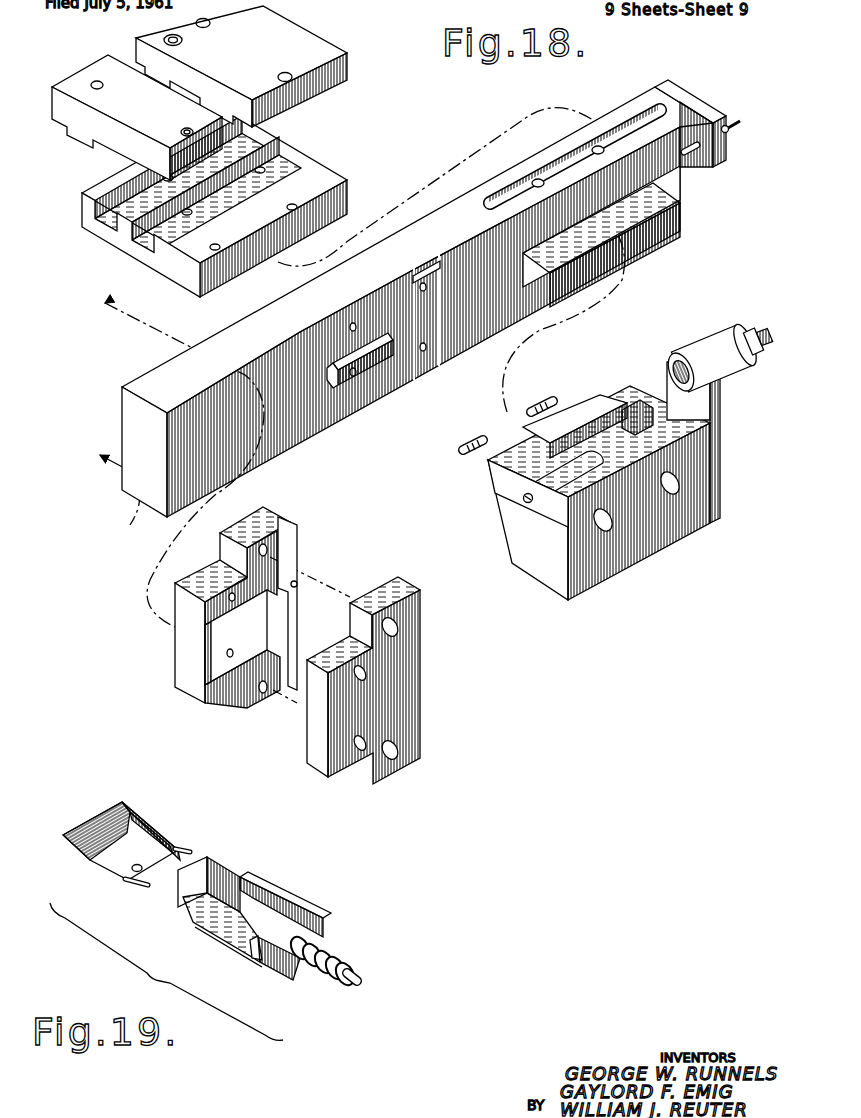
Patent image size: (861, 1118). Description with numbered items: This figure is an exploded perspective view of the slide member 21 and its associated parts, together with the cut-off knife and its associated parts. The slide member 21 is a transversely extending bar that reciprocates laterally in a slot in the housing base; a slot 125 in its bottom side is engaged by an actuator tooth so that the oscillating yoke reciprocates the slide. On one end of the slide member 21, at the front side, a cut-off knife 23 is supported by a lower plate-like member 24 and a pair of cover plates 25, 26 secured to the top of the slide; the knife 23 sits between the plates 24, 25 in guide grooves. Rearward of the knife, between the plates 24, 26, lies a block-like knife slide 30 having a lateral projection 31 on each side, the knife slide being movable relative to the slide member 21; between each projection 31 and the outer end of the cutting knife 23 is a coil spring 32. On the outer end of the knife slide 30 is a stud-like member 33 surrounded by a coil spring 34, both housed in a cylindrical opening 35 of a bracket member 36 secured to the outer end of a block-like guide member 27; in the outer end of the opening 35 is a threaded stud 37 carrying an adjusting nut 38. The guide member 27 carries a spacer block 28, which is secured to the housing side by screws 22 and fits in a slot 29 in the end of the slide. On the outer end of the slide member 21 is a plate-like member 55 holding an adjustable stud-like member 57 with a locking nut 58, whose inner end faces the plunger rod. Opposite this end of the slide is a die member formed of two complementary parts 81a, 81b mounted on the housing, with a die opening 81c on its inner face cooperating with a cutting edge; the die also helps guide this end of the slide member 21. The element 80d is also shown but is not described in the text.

In FIG. 18, the slide member 21 is at (448, 350).
In FIG. 18, the screws 22 is at (485, 410).
In FIG. 19, the cut-off knife 23 is at (150, 813).
In FIG. 18, the lower plate-like member 24 is at (112, 230).
In FIG. 18, the cover plate 25 is at (70, 80).
In FIG. 18, the cover plate 26 is at (287, 28).
In FIG. 18, the block-like guide member 27 is at (632, 553).
In FIG. 18, the spacer block 28 is at (490, 480).
In FIG. 18, the slot 29 is at (633, 213).
In FIG. 19, the knife slide 30 is at (227, 873).
In FIG. 19, the lateral projection 31 is at (287, 890).
In FIG. 19, the coil spring 32 is at (183, 855).
In FIG. 19, the stud-like member 33 is at (358, 980).
In FIG. 19, the coil spring 34 is at (325, 950).
In FIG. 18, the cylindrical opening 35 is at (665, 366).
In FIG. 18, the bracket member 36 is at (712, 440).
In FIG. 18, the threaded stud 37 is at (763, 330).
In FIG. 18, the adjusting nut 38 is at (745, 330).
In FIG. 18, the plate-like member 55 is at (673, 103).
In FIG. 18, the adjustable stud-like member 57 is at (737, 124).
In FIG. 18, the locking nut 58 is at (728, 131).
In FIG. 18, the pin 80d is at (296, 581).
In FIG. 18, the die part 81a is at (183, 613).
In FIG. 18, the die part 81b is at (417, 680).
In FIG. 18, the die opening 81c is at (290, 623).
In FIG. 18, the slot 125 is at (392, 362).